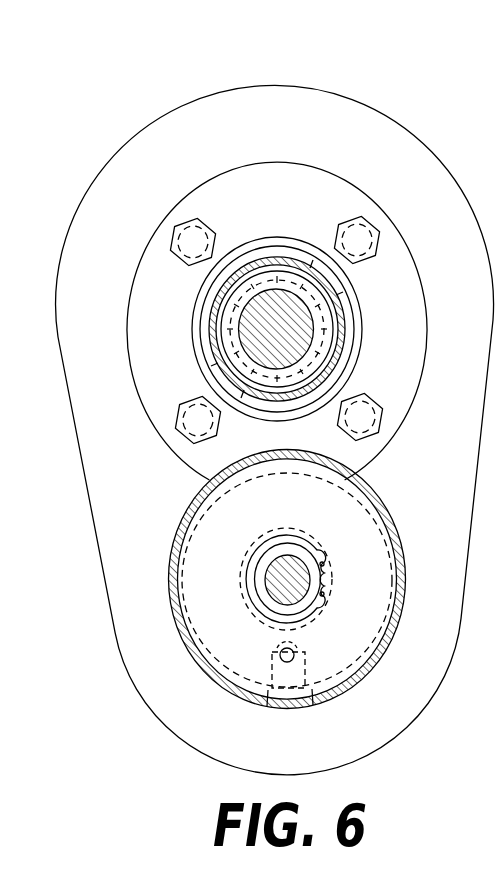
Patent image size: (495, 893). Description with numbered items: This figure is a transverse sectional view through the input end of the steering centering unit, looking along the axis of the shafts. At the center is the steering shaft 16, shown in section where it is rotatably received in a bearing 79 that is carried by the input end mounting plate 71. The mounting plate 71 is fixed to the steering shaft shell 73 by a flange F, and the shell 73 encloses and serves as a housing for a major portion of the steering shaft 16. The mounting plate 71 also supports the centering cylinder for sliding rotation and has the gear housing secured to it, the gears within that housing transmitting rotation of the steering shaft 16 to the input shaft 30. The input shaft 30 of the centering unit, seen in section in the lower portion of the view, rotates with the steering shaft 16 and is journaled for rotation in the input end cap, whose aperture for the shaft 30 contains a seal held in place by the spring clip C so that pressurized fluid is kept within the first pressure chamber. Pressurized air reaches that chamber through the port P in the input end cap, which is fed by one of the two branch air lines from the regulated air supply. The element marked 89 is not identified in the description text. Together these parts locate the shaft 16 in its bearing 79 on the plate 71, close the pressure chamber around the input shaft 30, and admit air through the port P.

The input end mounting plate 71 is at (340, 118).
The flange F is at (263, 185).
The steering shaft 16 is at (240, 327).
The bearing 79 is at (337, 297).
The steering shaft shell 73 is at (343, 327).
The input shaft 30 is at (266, 556).
The seal ring 89 is at (298, 553).
The spring clip C is at (267, 622).
The port P is at (303, 669).